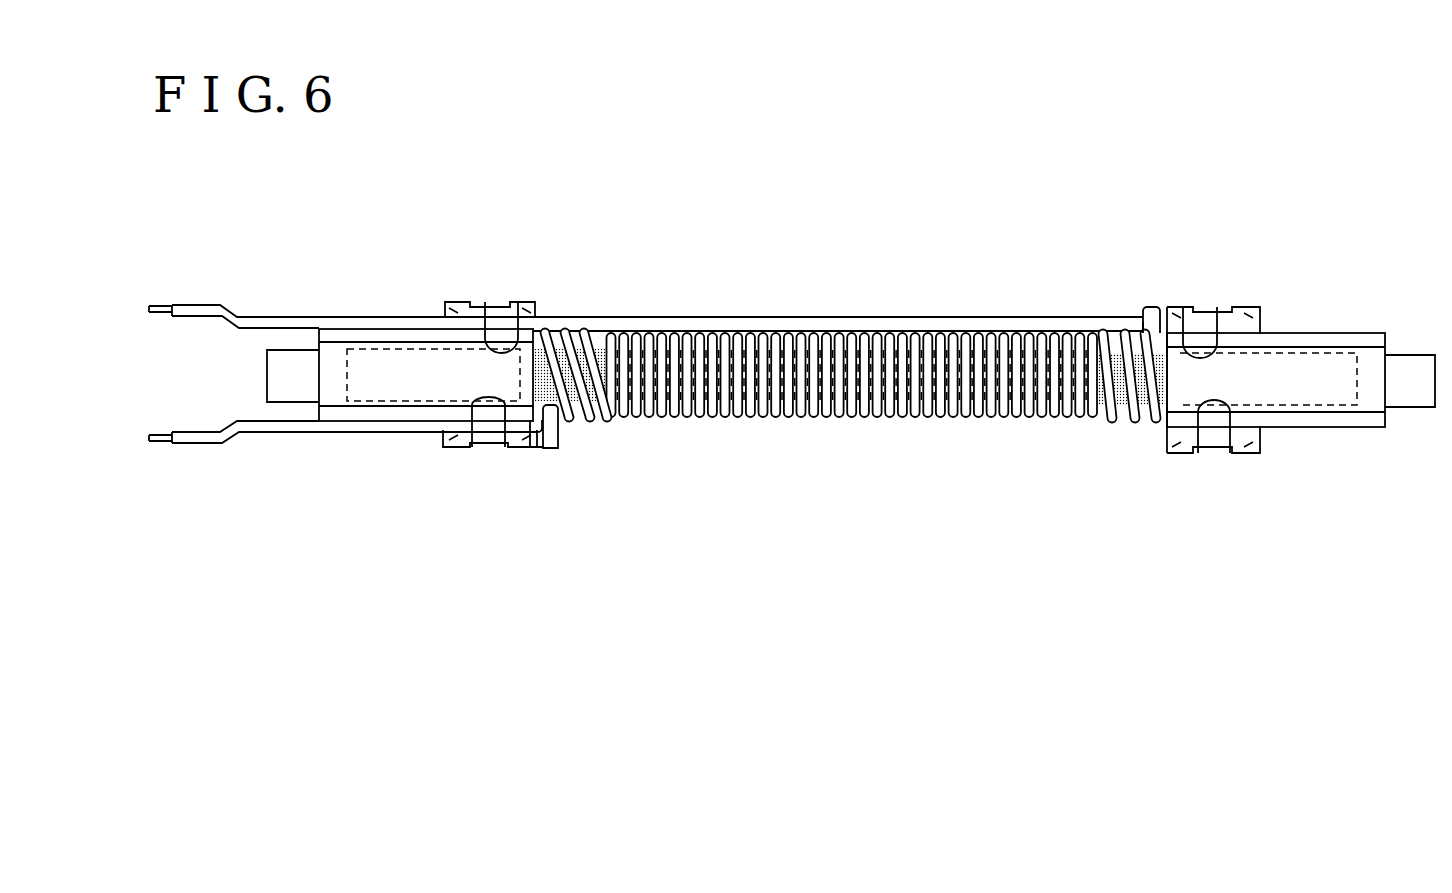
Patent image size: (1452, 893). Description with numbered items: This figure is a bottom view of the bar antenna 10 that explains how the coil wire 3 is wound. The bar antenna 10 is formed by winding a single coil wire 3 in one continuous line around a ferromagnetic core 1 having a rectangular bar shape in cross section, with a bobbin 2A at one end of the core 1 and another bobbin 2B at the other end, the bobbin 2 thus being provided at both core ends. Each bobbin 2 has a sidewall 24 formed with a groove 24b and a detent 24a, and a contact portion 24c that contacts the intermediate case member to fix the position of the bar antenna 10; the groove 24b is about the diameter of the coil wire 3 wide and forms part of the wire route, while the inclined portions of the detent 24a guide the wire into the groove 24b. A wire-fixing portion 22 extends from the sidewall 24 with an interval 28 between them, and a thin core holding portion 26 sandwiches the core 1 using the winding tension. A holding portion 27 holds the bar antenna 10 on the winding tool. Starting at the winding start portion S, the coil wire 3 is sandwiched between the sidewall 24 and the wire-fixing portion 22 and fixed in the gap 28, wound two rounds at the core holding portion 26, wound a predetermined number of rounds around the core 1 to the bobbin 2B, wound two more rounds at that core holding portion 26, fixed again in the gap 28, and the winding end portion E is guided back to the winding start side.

The bar antenna 10 is at (915, 272).
The ferromagnetic core 1 is at (606, 362).
The bobbin 2 is at (852, 321).
The bobbin 2A is at (362, 325).
The bobbin 2B is at (1350, 332).
The coil wire 3 is at (730, 322).
The wire-fixing portion 22 is at (1145, 307).
The sidewall 24 is at (1242, 302).
The detent 24a is at (447, 302).
The groove 24b is at (488, 300).
The contact portion 24c is at (520, 302).
The core holding portion 26 is at (590, 333).
The holding portion 27 is at (280, 375).
The interval 28 is at (1163, 307).
The winding end portion E is at (205, 302).
The winding start portion S is at (200, 445).